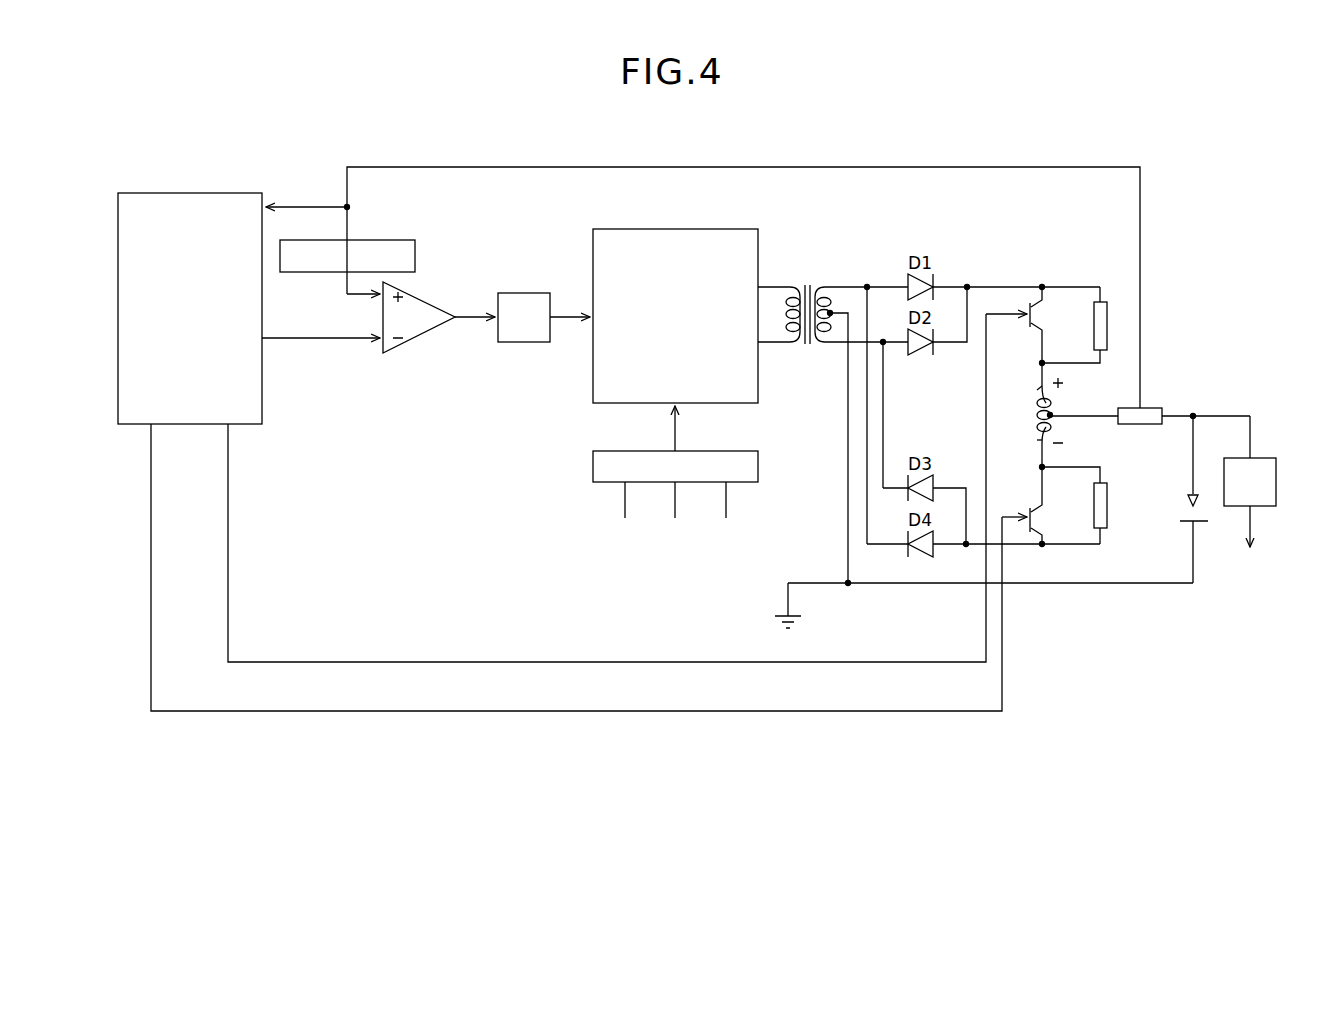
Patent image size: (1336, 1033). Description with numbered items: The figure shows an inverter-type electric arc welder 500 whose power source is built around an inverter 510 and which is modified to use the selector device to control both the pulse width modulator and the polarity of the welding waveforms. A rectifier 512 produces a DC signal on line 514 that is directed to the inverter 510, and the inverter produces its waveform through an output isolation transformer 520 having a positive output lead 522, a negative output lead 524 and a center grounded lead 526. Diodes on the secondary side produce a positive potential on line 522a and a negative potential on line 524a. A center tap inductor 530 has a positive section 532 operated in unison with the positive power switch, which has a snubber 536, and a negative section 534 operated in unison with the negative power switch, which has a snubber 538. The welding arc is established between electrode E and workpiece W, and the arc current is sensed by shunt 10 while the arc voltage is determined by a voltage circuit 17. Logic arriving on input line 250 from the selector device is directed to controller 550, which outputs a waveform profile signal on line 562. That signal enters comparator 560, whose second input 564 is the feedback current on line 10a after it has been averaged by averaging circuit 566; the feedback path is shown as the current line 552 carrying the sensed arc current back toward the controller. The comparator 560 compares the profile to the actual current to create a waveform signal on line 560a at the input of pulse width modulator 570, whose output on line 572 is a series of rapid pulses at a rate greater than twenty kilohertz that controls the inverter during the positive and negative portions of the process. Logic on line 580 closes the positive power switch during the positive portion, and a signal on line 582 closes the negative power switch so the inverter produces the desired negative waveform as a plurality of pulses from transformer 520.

The welder 500 is at (878, 137).
The feedback current line 10a is at (418, 167).
The controller 550 is at (189, 193).
The current feedback line 552 is at (327, 204).
The averaging circuit 566 is at (397, 240).
The second input 564 is at (345, 298).
The comparator 560 is at (420, 293).
The output waveform profile signal line 562 is at (306, 340).
The waveform signal line 560a is at (468, 320).
The pulse width modulator 570 is at (530, 293).
The pulse width modulator output line 572 is at (563, 322).
The inverter 510 is at (713, 229).
The DC signal line 514 is at (675, 432).
The rectifier 512 is at (593, 462).
The output isolation transformer 520 is at (810, 287).
The positive output lead 522 is at (850, 287).
The negative output lead 524 is at (830, 345).
The center grounded lead 526 is at (848, 442).
The positive potential line 522a is at (1007, 287).
The snubber 536 is at (1107, 325).
The center tap inductor 530 is at (1060, 408).
The positive section 532 is at (1037, 392).
The negative section 534 is at (1037, 440).
The shunt 10 is at (1155, 408).
The electrode E is at (1190, 496).
The workpiece W is at (1200, 521).
The arc voltage sensor 17 is at (1263, 506).
The negative potential line 524a is at (1075, 544).
The snubber 538 is at (1107, 511).
The positive logic line 580 is at (585, 662).
The negative logic line 582 is at (641, 711).
The input line 250 is at (191, 430).